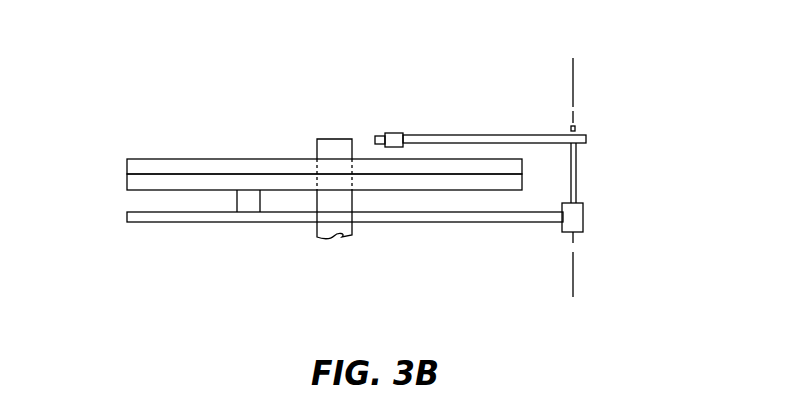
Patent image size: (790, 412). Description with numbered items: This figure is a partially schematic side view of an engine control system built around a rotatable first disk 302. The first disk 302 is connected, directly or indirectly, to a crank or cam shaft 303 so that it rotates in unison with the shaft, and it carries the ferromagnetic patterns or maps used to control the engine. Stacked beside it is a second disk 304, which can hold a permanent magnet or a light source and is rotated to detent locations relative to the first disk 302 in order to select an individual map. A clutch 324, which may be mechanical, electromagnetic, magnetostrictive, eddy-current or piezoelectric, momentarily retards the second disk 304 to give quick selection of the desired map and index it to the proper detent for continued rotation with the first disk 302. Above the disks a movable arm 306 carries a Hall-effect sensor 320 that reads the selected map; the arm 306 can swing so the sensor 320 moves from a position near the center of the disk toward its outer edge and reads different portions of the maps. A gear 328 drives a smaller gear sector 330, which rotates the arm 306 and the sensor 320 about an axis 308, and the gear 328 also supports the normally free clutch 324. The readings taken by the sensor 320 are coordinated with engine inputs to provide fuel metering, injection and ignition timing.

The first disk 302 is at (137, 165).
The crank or cam shaft 303 is at (340, 145).
The second disk 304 is at (128, 185).
The movable arm 306 is at (540, 138).
The axis 308 is at (575, 80).
The Hall-effect sensor 320 is at (387, 132).
The clutch 324 is at (252, 202).
The gear 328 is at (430, 215).
The gear sector 330 is at (573, 215).